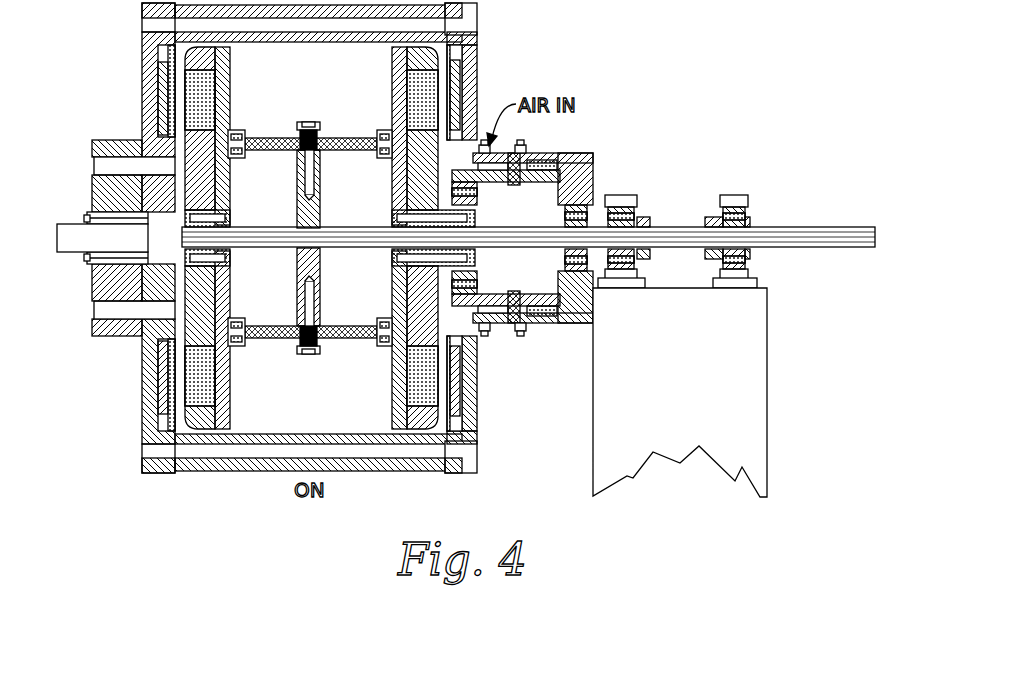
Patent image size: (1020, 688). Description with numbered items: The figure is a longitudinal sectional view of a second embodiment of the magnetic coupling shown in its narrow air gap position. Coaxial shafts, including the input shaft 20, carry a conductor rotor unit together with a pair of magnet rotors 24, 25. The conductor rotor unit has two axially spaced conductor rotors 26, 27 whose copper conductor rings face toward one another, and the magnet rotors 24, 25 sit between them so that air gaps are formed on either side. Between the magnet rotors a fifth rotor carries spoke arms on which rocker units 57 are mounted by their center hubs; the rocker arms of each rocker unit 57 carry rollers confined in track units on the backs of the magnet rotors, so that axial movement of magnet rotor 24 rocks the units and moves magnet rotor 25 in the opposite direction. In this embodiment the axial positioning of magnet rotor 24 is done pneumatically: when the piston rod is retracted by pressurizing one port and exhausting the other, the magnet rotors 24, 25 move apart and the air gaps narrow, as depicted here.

The input shaft 20 is at (76, 258).
The magnet rotor 24 is at (386, 378).
The magnet rotor 25 is at (234, 92).
The conductor rotor 26 is at (480, 72).
The conductor rotor 27 is at (140, 72).
The rocker unit 57 is at (305, 358).